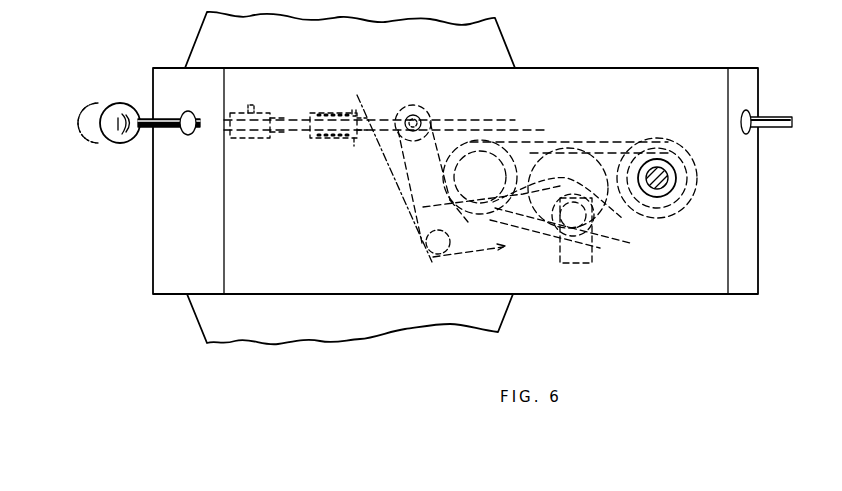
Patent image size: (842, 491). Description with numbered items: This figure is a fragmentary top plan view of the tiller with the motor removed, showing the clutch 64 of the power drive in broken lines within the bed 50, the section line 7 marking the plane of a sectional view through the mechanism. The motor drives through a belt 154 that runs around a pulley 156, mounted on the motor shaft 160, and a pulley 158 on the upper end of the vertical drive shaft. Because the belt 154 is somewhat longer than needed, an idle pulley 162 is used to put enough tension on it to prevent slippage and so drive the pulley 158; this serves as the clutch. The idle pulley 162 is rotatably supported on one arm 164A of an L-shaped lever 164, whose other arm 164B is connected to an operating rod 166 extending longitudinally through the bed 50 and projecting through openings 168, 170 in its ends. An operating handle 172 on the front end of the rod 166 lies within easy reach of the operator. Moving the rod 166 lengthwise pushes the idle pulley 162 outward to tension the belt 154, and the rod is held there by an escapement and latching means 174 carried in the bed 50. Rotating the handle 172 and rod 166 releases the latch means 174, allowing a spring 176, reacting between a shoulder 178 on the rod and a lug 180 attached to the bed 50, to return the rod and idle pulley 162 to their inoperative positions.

The section line 7- 7 is at (408, 88).
The bed 50 is at (745, 232).
The clutch 64 is at (590, 140).
The belt 154 is at (623, 144).
The pulley 156 is at (678, 211).
The pulley 158 is at (413, 212).
The shaft of motor 160 is at (663, 173).
The idle pulley 162 is at (622, 241).
The L-shaped lever 164 is at (458, 206).
The arm of lever 164A is at (516, 242).
The arm of lever 164B is at (424, 193).
The operating rod 166 is at (284, 128).
The opening in end of bed 168 is at (186, 110).
The opening in end of bed 170 is at (748, 118).
The operating handle 172 is at (137, 140).
The escapement and latching means 174 is at (268, 112).
The spring 176 is at (336, 114).
The shoulder on rod 178 is at (322, 140).
The lug 180 is at (357, 140).